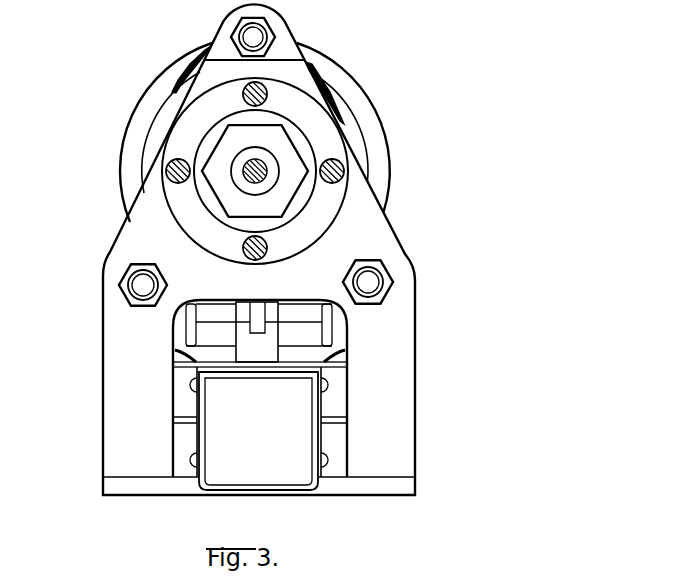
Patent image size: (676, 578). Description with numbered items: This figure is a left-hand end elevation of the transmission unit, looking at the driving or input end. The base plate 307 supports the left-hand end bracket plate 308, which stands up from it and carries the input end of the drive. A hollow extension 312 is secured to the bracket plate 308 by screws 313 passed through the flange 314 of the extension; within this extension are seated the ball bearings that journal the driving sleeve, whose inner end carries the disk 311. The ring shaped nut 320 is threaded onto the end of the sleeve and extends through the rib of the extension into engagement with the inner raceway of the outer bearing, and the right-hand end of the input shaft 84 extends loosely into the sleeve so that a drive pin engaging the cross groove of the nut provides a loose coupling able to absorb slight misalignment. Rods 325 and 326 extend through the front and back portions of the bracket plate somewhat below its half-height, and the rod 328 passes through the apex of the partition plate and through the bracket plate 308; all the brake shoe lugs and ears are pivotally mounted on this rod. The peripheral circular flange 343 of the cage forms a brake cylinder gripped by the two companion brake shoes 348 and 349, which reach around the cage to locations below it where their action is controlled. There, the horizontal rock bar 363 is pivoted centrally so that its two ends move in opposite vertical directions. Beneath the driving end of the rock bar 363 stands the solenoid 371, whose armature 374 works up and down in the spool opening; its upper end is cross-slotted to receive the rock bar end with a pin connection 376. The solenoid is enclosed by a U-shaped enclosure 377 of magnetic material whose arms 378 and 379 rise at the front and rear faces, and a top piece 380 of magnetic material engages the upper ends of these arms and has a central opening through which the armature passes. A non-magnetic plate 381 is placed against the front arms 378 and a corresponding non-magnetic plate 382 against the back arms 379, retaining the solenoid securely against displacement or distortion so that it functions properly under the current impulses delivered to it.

The input shaft 84 is at (262, 180).
The base plate 307 is at (365, 490).
The left-hand end bracket plate 308 is at (395, 357).
The disk 311 is at (343, 132).
The hollow extension 312 is at (320, 197).
The screws 313 is at (343, 168).
The flange 314 is at (313, 117).
The ring shaped nut 320 is at (313, 152).
The rod 325 is at (368, 280).
The rod 326 is at (143, 287).
The rod 328 is at (258, 35).
The peripheral circular flange of the cage 343 is at (347, 120).
The brake shoe 348 is at (363, 108).
The brake shoe 349 is at (128, 150).
The rock bar 363 is at (262, 302).
The solenoid 371 is at (258, 455).
The armature 374 is at (258, 353).
The pin connection 376 is at (233, 318).
The U-shaped enclosure 377 is at (235, 492).
The arm 378 is at (312, 425).
The arm 379 is at (205, 428).
The top piece 380 is at (222, 368).
The plate of non-magnetic material 381 is at (323, 411).
The plate of non-magnetic material 382 is at (197, 422).